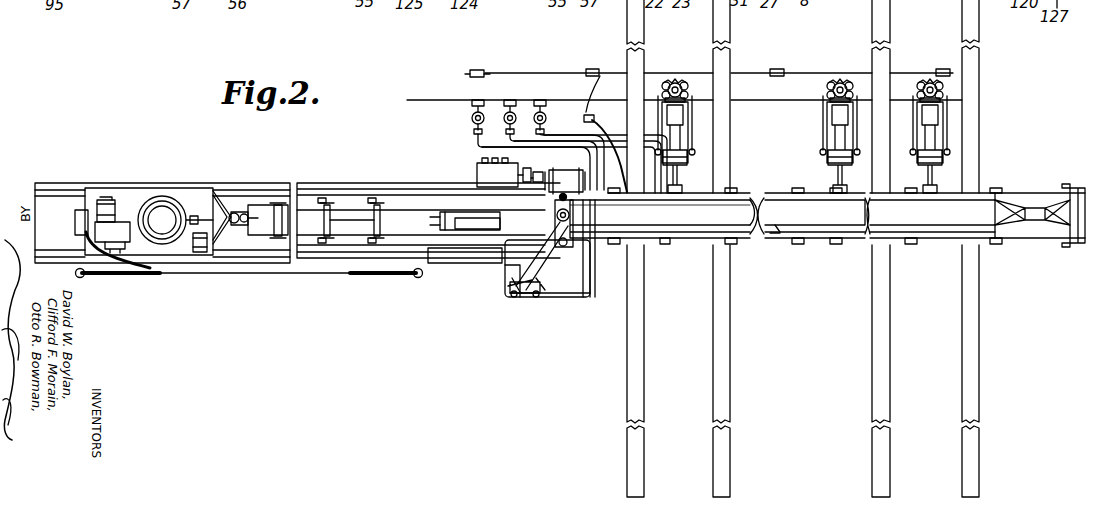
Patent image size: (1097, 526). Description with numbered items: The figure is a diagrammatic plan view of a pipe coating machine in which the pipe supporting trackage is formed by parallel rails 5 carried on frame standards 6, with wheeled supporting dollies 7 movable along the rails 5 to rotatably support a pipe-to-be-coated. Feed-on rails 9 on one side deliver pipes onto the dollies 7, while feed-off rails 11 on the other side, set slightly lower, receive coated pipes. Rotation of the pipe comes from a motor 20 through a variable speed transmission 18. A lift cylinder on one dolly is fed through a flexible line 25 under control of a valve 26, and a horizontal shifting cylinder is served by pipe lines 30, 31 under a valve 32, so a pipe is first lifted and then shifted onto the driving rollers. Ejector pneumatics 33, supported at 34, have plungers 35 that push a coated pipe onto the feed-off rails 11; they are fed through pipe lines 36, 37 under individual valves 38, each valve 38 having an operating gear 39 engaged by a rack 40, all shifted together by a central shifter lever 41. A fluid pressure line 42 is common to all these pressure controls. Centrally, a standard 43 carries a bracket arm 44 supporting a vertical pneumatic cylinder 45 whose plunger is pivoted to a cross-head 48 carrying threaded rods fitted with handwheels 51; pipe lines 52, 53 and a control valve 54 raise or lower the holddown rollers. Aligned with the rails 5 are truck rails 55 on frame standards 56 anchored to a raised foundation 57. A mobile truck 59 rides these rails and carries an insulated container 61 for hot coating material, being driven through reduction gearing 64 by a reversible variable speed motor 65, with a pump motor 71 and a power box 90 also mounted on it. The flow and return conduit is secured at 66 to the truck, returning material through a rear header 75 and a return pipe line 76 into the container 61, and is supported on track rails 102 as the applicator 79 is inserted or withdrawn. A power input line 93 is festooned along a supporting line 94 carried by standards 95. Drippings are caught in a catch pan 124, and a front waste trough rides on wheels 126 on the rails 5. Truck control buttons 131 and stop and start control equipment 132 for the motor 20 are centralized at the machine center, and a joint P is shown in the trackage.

The rails 5 is at (830, 230).
The frame standards 6 is at (795, 240).
The wheeled supporting dollies 7 is at (778, 187).
The feed-on rails 9 is at (644, 28).
The feed-off rails 11 is at (713, 348).
The variable speed transmission 18 is at (510, 172).
The motor 20 is at (572, 185).
The flexible line 25 is at (601, 76).
The valve 26 is at (568, 92).
The pipe line 30 is at (470, 146).
The pipe line 31 is at (566, 135).
The valve 32 is at (532, 100).
The ejector pneumatics 33 is at (834, 146).
The support 34 is at (940, 108).
The plungers 35 is at (838, 182).
The pipe line 36 is at (826, 117).
The pipe line 37 is at (948, 126).
The valve 38 is at (673, 84).
The operating gear 39 is at (834, 84).
The rack 40 is at (684, 84).
The shifter lever 41 is at (481, 67).
The fluid pressure line 42 is at (452, 104).
The standard 43 is at (536, 288).
The bracket arm 44 is at (563, 276).
The pneumatic cylinder 45 is at (592, 238).
The cross-head 48 is at (586, 205).
The handwheels 51 is at (588, 287).
The pipe line 52 is at (590, 272).
The pipe line 53 is at (600, 257).
The control valve 54 is at (470, 118).
The rails 55 is at (76, 244).
The frame standards 56 is at (330, 189).
The raised foundation 57 is at (348, 256).
The mobile truck 59 is at (130, 188).
The container 61 is at (170, 200).
The reduction gearing 64 is at (104, 275).
The reversible variable speed motor 65 is at (106, 198).
The conduit securing point 66 is at (220, 195).
The motor 71 is at (200, 256).
The rear header 75 is at (243, 212).
The return pipe line 76 is at (224, 264).
The applicator 79 is at (452, 212).
The power box 90 is at (55, 200).
The power input line 93 is at (130, 265).
The supporting line 94 is at (277, 274).
The standards 95 is at (424, 276).
The track rail 102 is at (355, 205).
The catch pan 124 is at (466, 264).
The wheels 126 is at (1058, 176).
The stop, start and reverse buttons 131 is at (475, 170).
The stop and start control equipment 132 is at (470, 171).
The joint P is at (757, 234).